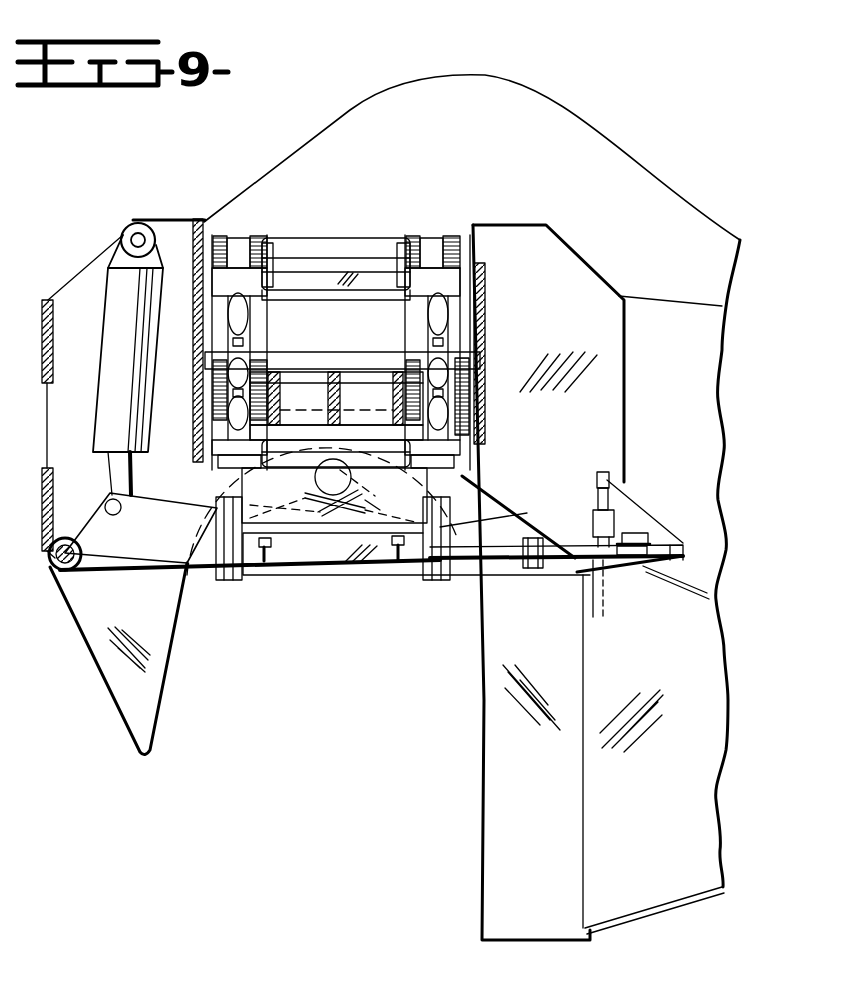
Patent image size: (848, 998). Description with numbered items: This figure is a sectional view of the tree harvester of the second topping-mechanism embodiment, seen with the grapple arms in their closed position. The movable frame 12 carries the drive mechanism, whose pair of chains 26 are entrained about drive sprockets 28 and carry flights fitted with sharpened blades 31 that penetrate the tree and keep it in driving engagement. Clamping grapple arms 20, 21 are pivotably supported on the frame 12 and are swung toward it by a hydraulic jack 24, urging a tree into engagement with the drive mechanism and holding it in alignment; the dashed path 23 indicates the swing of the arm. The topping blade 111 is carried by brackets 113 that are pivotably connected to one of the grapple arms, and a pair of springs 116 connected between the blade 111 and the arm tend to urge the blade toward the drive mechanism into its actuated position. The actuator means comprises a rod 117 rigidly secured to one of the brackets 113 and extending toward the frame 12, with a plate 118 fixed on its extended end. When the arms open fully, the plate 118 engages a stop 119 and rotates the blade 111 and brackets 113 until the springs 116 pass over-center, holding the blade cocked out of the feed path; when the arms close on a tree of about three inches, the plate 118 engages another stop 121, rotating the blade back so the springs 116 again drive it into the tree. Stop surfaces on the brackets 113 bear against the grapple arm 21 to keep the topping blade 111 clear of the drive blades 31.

The movable frame 12 is at (197, 222).
The hydraulic jack 24 is at (107, 270).
The chain 26 is at (228, 233).
The drive sprocket 28 is at (238, 315).
The sharpened blade 31 is at (357, 273).
The swing path of blade 23 is at (323, 478).
The topping blade 111 is at (212, 508).
The grapple arm 20 is at (152, 560).
The bracket 113 is at (230, 580).
The spring 116 is at (262, 566).
The grapple arm 21 is at (536, 577).
The rod 117 is at (514, 548).
The stop 119 is at (625, 480).
The plate 118 is at (641, 533).
The stop 121 is at (673, 573).